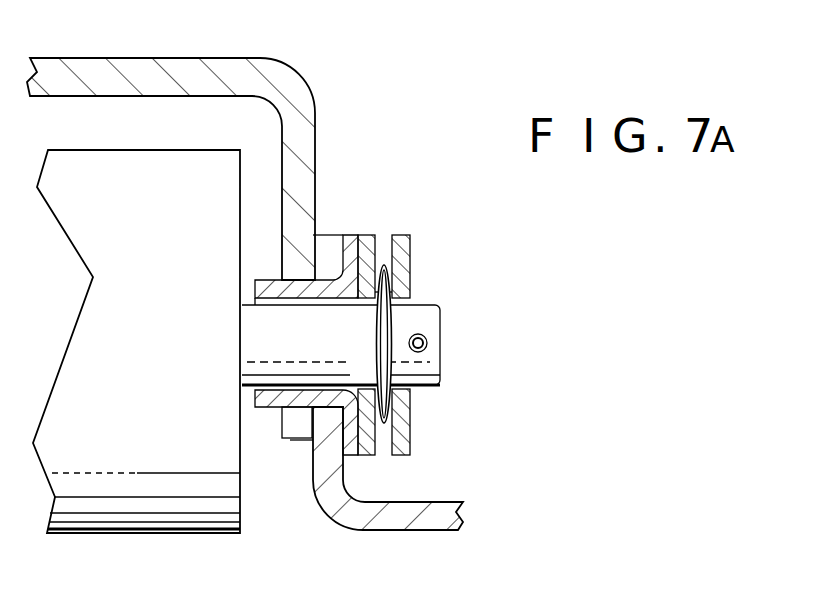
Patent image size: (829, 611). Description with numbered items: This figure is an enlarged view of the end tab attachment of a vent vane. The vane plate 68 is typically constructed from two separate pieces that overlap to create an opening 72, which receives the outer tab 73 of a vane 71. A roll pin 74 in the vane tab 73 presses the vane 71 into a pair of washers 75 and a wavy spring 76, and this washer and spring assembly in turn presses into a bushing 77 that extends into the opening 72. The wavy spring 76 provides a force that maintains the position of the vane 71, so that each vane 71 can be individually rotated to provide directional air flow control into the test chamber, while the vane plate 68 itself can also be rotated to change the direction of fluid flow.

The vane plate 68 is at (302, 126).
The vane 71 is at (136, 341).
The opening 72 is at (250, 388).
The outer tab 73 is at (427, 317).
The roll pin 74 is at (428, 343).
The washer 75 is at (364, 235).
The wavy spring 76 is at (397, 410).
The bushing 77 is at (262, 405).